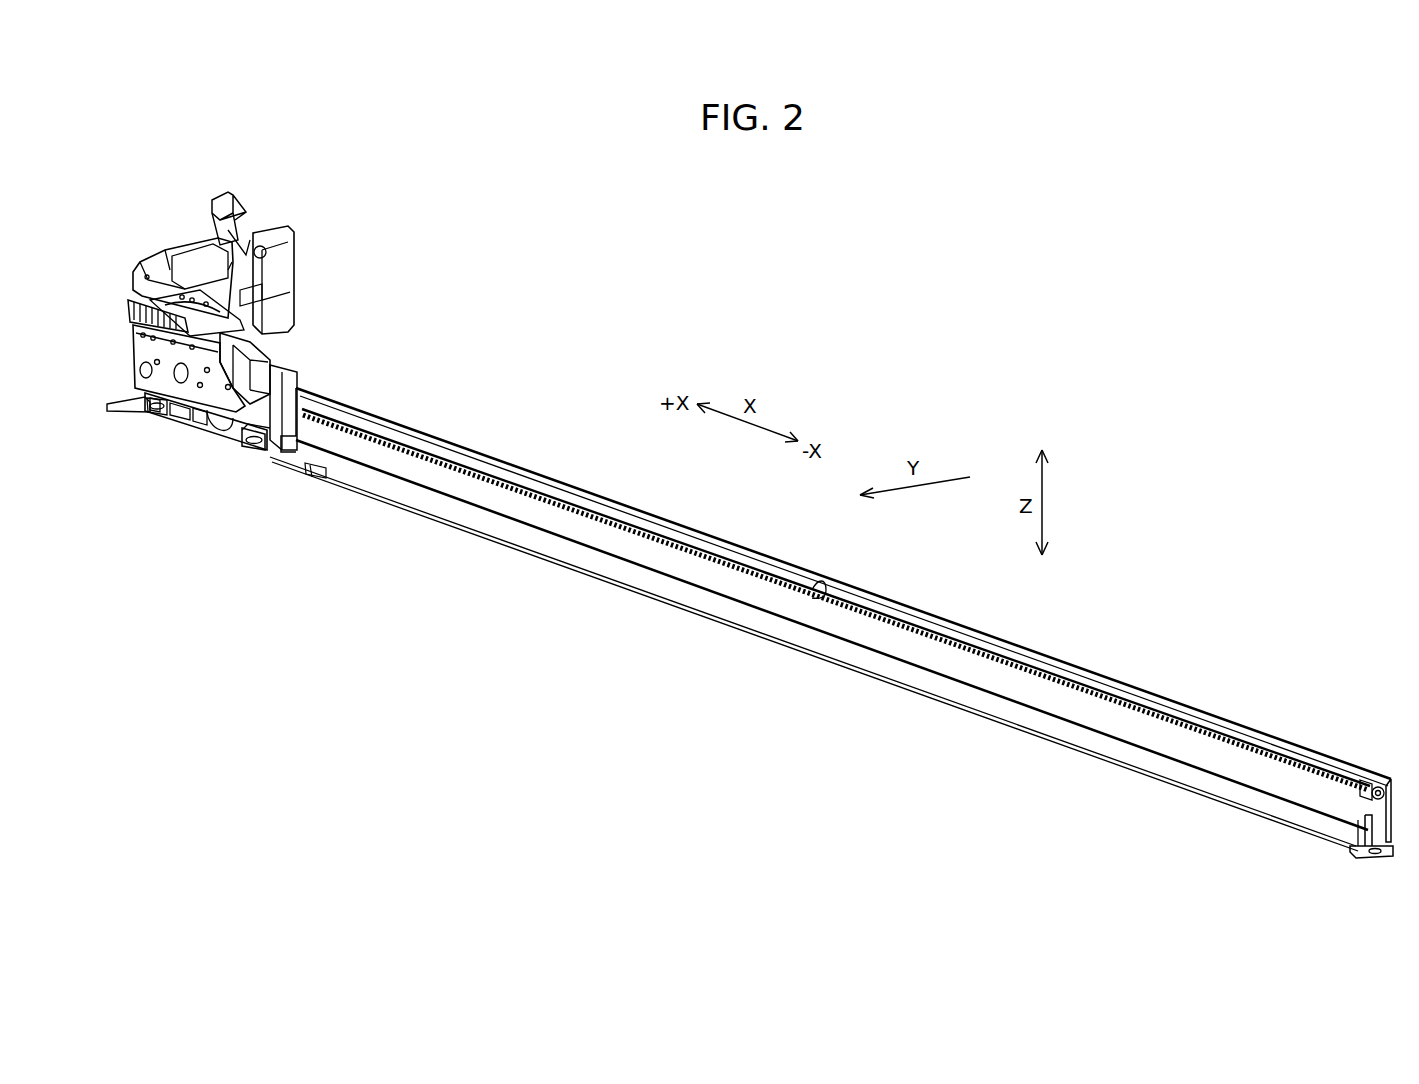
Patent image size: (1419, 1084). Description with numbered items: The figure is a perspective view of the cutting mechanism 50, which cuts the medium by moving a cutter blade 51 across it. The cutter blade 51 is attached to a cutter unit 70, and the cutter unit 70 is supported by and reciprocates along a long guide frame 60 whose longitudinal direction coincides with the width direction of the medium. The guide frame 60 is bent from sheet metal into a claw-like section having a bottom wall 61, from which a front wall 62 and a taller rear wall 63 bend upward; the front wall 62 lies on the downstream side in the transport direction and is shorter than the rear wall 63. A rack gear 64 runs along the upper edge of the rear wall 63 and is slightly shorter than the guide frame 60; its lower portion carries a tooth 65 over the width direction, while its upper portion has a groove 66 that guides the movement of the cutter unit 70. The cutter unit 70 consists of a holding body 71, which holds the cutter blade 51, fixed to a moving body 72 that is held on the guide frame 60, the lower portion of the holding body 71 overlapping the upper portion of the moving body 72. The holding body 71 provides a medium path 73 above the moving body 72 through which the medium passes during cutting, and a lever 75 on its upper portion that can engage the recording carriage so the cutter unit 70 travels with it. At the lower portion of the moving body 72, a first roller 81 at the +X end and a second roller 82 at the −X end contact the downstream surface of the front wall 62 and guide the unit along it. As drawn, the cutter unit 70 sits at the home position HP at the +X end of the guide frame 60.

The cutting mechanism 50 is at (956, 346).
The guide frame 60 is at (976, 616).
The bottom wall 61 is at (1382, 858).
The front wall 62 is at (1226, 795).
The rear wall 63 is at (1392, 792).
The rack gear 64 is at (886, 612).
The tooth 65 is at (922, 645).
The groove 66 is at (812, 590).
The cutter unit 70 is at (318, 222).
The holding body 71 is at (186, 244).
The moving body 72 is at (184, 440).
The medium path 73 is at (136, 302).
The lever 75 is at (236, 197).
The first roller 81 is at (135, 416).
The second roller 82 is at (236, 450).
The cutter blade 51 is at (275, 337).
The home position HP is at (203, 508).